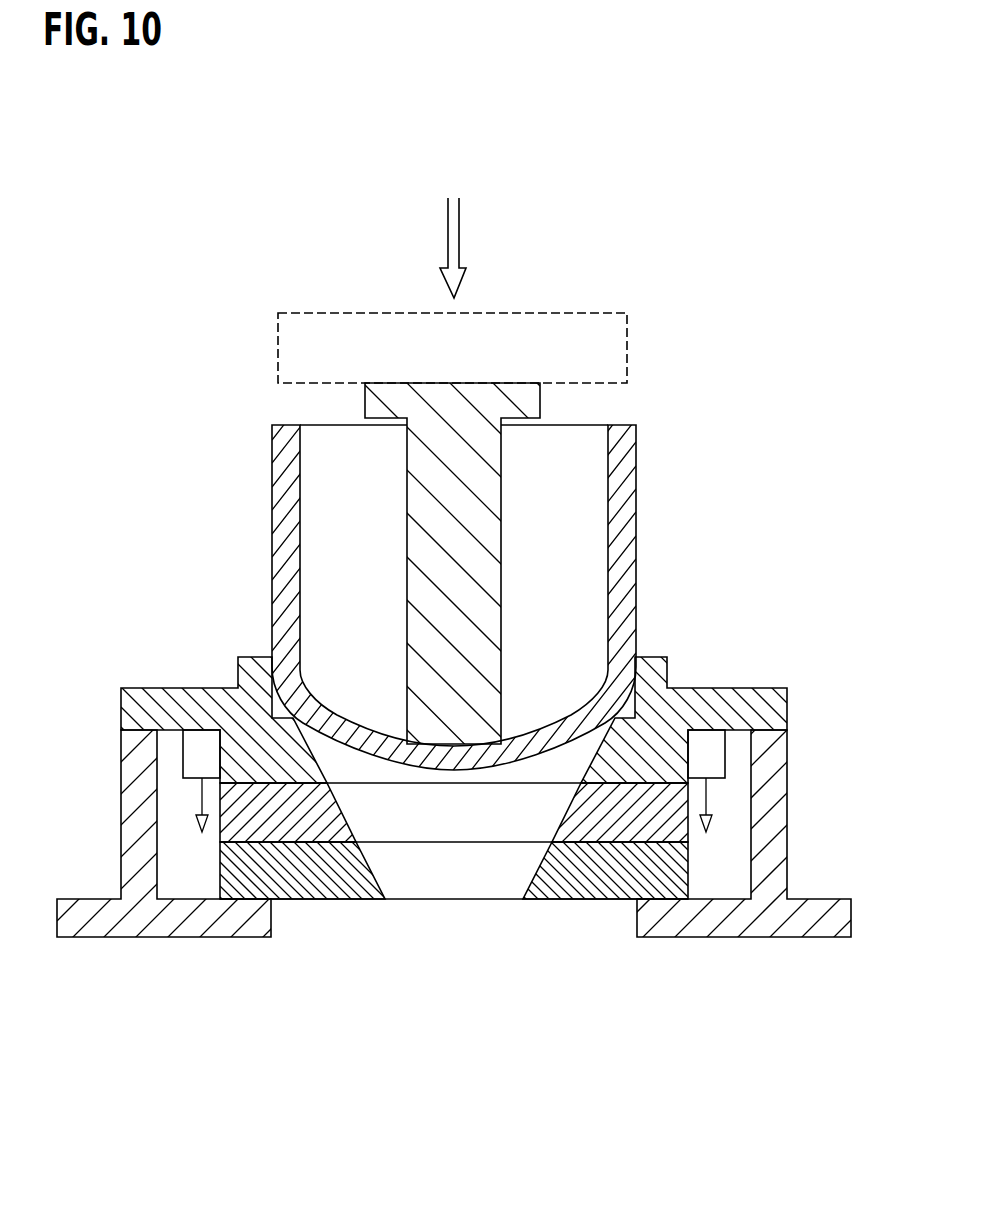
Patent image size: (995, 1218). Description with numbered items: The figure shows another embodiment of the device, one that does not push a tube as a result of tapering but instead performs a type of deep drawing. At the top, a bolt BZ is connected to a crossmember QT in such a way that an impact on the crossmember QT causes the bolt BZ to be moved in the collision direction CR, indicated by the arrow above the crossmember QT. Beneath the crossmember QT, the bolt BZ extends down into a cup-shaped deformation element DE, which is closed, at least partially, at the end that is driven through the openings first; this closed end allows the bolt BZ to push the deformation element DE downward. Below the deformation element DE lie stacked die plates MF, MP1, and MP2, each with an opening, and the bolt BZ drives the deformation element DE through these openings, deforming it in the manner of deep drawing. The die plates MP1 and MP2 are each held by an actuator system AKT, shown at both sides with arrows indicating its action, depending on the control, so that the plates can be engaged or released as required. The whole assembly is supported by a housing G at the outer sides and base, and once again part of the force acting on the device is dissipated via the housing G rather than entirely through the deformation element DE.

The collision direction CR is at (458, 232).
The crossmember QT is at (612, 332).
The deformation element DE is at (622, 468).
The bolt BZ is at (475, 543).
The die plate MF is at (193, 698).
The actuator system AKT is at (193, 762).
The housing G is at (133, 833).
The die plate MP1 is at (585, 820).
The die plate MP2 is at (568, 887).